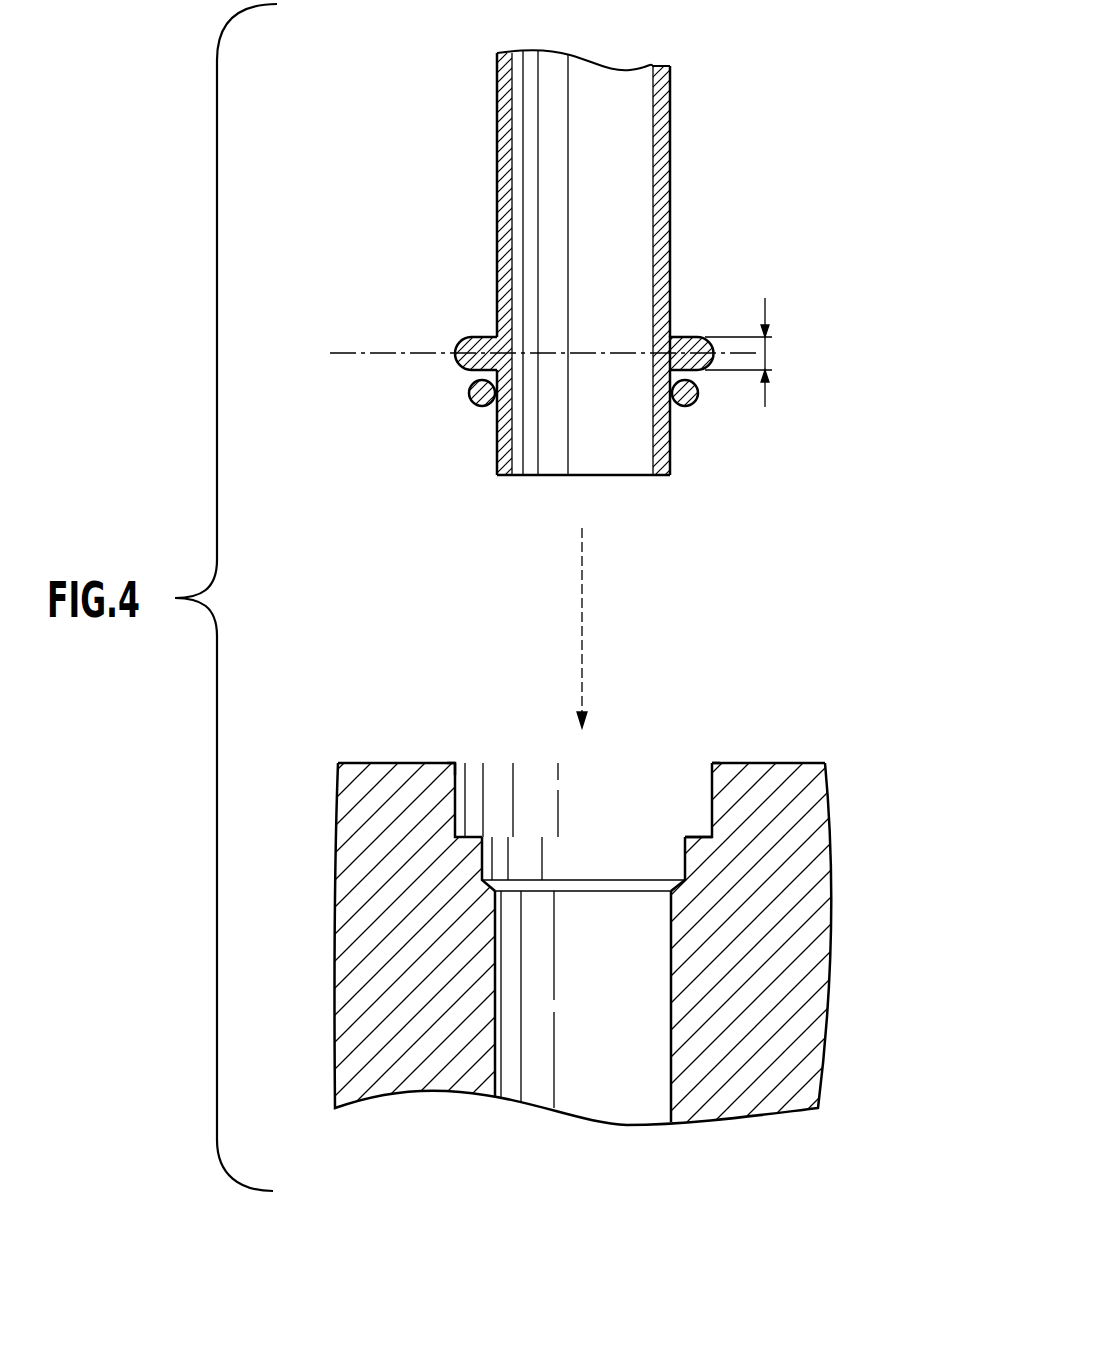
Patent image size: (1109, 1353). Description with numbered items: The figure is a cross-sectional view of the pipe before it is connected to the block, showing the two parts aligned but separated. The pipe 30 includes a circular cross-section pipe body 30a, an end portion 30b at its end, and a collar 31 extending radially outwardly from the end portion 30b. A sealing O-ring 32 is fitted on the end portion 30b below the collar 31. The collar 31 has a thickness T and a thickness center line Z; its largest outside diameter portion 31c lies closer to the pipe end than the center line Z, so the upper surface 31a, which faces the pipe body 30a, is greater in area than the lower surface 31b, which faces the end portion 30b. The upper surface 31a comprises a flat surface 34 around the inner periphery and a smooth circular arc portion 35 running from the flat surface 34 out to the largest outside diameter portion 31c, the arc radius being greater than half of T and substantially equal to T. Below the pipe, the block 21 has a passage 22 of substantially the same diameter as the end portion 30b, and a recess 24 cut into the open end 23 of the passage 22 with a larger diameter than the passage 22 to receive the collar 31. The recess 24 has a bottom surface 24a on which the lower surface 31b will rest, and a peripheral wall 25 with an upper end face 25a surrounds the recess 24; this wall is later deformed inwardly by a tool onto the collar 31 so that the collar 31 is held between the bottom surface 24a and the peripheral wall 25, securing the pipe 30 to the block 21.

The block 21 is at (773, 948).
The passage 22 is at (643, 1077).
The open end 23 is at (667, 773).
The recess 24 is at (687, 793).
The bottom surface 24a is at (697, 832).
The peripheral wall 25 is at (448, 775).
The upper end face 25a is at (760, 763).
The pipe 30 is at (566, 272).
The pipe body 30a is at (660, 160).
The end portion 30b is at (658, 448).
The collar 31 is at (536, 330).
The upper surface 31a is at (442, 277).
The lower surface 31b is at (463, 377).
The largest outside diameter portion 31c is at (457, 364).
The O-ring 32 is at (483, 407).
The flat surface 34 is at (492, 337).
The circular arc portion 35 is at (463, 338).
The thickness T is at (752, 352).
The thickness center line Z is at (360, 353).